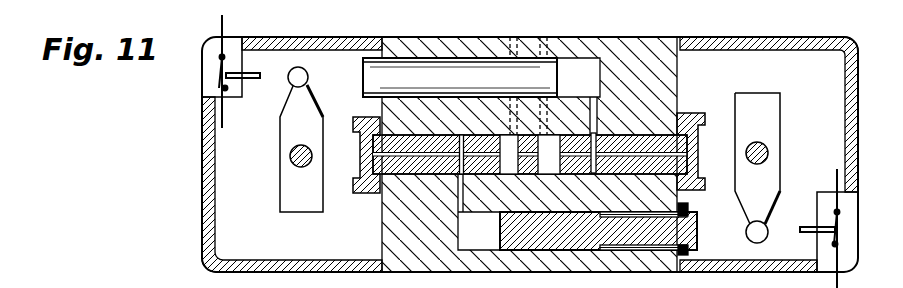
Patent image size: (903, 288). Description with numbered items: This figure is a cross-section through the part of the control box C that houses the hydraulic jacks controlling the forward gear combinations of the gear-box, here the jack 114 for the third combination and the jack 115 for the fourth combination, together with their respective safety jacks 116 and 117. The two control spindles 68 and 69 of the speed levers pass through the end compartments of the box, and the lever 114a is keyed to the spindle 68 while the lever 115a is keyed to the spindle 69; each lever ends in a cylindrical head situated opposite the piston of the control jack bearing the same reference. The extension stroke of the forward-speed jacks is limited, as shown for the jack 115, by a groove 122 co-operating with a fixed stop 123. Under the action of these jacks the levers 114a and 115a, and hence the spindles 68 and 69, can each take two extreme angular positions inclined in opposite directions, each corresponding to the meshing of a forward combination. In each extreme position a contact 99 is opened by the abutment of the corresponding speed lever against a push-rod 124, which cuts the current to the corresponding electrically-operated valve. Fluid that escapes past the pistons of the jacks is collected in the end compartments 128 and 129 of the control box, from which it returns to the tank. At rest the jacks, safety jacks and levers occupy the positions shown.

The control box C is at (410, 37).
The contact 99 is at (203, 69).
The jack 114 is at (460, 77).
The lever 114a is at (309, 77).
The jack 115 is at (535, 232).
The lever 115a is at (748, 234).
The safety jack 116 is at (637, 140).
The safety jack 117 is at (392, 168).
The groove 122 is at (655, 214).
The fixed stop 123 is at (686, 210).
The push-rod 124 is at (808, 227).
The end compartment 128 is at (292, 154).
The end compartment 129 is at (769, 154).
The control spindle 68 is at (291, 160).
The control spindle 69 is at (769, 152).